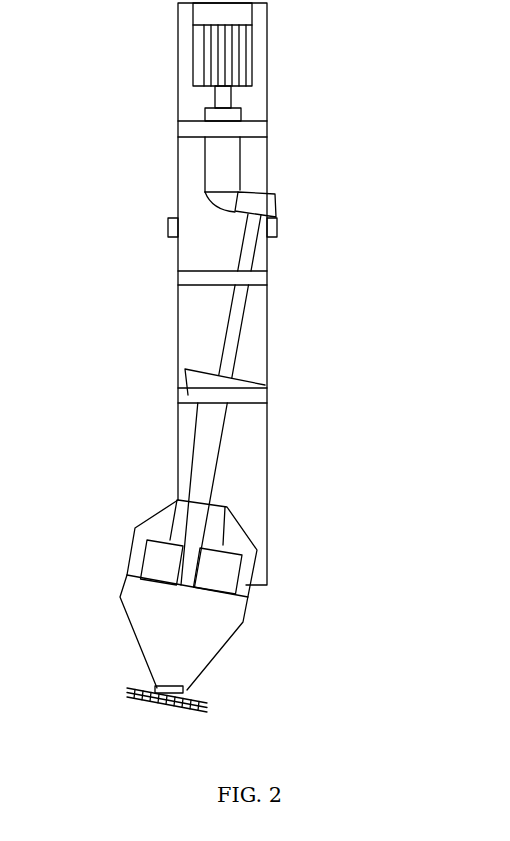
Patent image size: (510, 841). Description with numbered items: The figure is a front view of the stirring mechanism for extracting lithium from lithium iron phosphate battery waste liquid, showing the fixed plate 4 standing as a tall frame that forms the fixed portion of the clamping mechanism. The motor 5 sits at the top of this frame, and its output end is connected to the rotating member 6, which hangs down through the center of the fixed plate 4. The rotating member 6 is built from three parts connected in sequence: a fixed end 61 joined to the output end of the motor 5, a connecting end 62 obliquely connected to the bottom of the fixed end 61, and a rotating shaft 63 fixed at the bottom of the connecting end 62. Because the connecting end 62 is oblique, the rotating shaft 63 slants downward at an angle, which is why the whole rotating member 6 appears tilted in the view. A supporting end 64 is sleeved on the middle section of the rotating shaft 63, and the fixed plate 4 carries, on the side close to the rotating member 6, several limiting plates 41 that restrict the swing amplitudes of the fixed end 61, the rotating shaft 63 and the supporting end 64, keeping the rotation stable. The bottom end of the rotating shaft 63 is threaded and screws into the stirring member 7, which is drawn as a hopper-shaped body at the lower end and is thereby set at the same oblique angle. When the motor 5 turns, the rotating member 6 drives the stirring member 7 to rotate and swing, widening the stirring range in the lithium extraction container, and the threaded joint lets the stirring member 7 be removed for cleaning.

The fixed plate 4 is at (178, 78).
The motor 5 is at (243, 53).
The limiting plate 41 is at (187, 393).
The rotating member 6 is at (294, 358).
The fixed end 61 is at (223, 178).
The connecting end 62 is at (257, 205).
The rotating shaft 63 is at (233, 330).
The supporting end 64 is at (266, 403).
The stirring member 7 is at (208, 618).